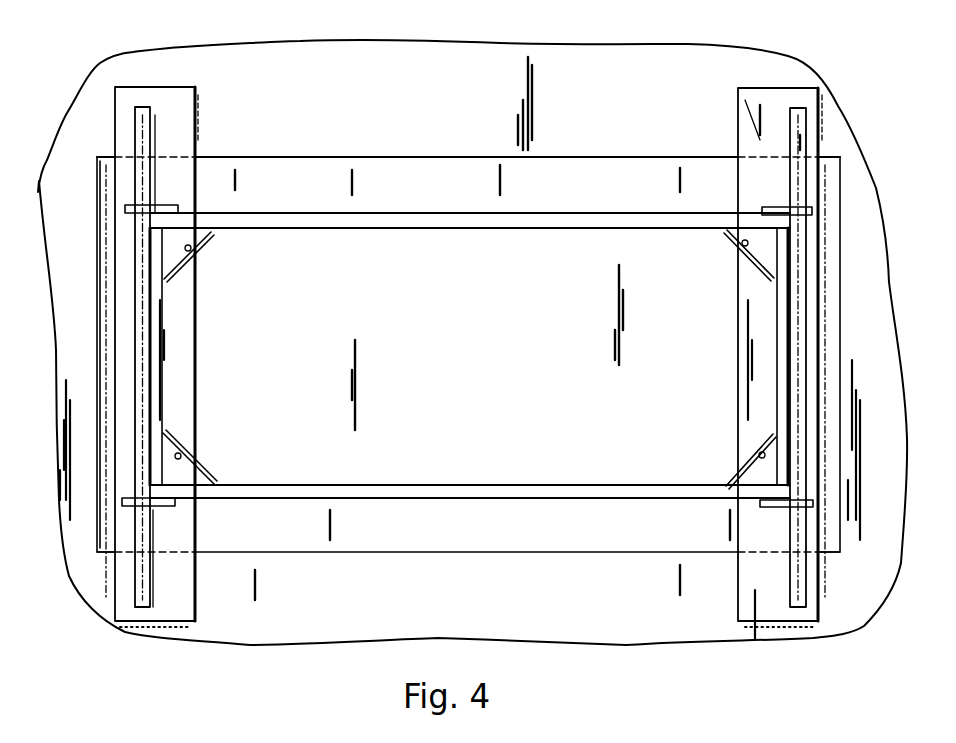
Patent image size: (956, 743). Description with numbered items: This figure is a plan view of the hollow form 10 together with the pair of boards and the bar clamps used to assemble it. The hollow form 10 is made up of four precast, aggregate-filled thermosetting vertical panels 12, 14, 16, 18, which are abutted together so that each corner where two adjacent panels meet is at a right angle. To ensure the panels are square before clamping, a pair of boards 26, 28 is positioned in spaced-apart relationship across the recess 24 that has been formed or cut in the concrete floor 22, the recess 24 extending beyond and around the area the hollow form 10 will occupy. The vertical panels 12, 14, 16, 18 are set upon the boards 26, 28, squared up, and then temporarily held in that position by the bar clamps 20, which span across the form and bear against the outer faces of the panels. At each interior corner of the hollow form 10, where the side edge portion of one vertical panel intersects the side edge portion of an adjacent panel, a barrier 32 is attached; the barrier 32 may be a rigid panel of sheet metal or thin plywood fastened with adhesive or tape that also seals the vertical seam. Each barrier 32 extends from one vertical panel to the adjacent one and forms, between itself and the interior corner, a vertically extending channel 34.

The hollow form 10 is at (473, 312).
The vertical panel 12 is at (476, 501).
The vertical panel 14 is at (477, 211).
The vertical panel 16 is at (150, 344).
The vertical panel 18 is at (790, 343).
The bar clamp 20 is at (135, 186).
The concrete floor 22 is at (460, 605).
The recess 24 is at (326, 198).
The board 26 is at (178, 87).
The board 28 is at (762, 88).
The barrier 32 is at (178, 272).
The vertically extending channel 34 is at (196, 246).